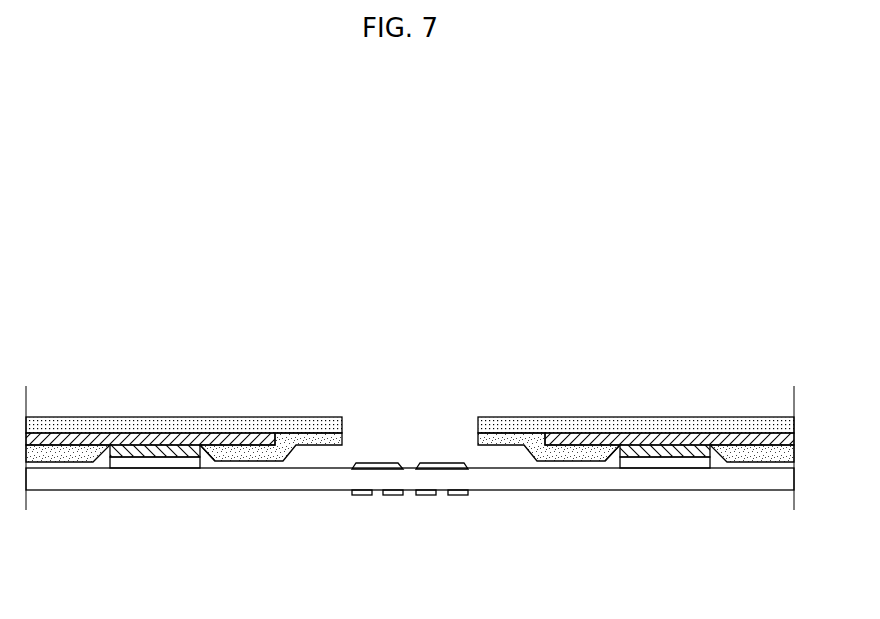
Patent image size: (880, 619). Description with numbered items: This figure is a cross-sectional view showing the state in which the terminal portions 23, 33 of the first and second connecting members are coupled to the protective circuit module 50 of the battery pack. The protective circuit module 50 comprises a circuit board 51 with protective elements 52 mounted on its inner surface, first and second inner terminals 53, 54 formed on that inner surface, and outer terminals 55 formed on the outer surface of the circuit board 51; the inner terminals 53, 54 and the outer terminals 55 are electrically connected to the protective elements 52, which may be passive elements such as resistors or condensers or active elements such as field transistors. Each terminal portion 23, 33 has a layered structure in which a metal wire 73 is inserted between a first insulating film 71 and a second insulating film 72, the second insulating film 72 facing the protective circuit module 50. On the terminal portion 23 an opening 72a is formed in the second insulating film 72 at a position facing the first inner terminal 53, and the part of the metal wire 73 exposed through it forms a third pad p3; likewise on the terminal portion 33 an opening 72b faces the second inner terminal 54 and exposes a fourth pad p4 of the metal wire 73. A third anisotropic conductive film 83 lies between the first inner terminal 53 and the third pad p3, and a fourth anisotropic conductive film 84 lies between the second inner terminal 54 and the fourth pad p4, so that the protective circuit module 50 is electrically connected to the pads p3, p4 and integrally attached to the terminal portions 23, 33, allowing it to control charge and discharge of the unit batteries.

The protective circuit module 50 is at (510, 514).
The circuit board 51 is at (274, 478).
The protective elements 52 is at (380, 463).
The outer terminals 55 is at (352, 502).
The first insulating film 71 is at (231, 428).
The second insulating film 72 is at (58, 450).
The opening 72a is at (206, 457).
The opening 72b is at (614, 455).
The metal wire 73 is at (410, 404).
The third pad p3 is at (128, 440).
The fourth pad p4 is at (649, 440).
The third anisotropic conductive film 83 is at (127, 452).
The first inner terminal 53 is at (160, 462).
The fourth anisotropic conductive film 84 is at (640, 452).
The second inner terminal 54 is at (697, 463).
The terminal portion 23 is at (182, 403).
The terminal portion 33 is at (581, 403).